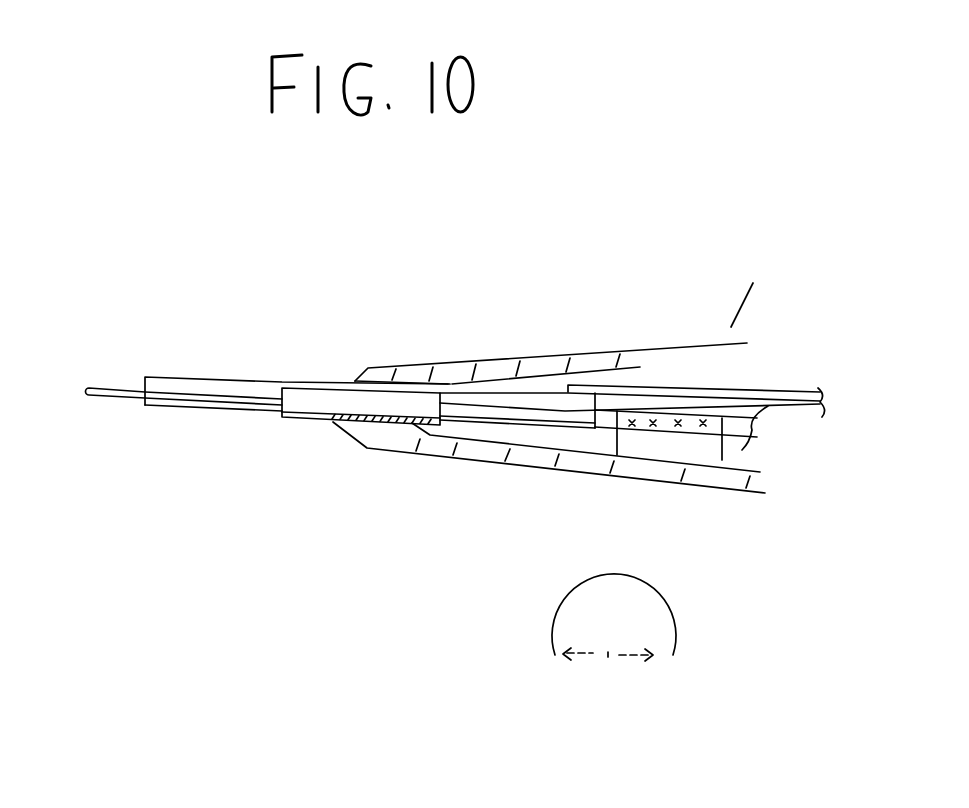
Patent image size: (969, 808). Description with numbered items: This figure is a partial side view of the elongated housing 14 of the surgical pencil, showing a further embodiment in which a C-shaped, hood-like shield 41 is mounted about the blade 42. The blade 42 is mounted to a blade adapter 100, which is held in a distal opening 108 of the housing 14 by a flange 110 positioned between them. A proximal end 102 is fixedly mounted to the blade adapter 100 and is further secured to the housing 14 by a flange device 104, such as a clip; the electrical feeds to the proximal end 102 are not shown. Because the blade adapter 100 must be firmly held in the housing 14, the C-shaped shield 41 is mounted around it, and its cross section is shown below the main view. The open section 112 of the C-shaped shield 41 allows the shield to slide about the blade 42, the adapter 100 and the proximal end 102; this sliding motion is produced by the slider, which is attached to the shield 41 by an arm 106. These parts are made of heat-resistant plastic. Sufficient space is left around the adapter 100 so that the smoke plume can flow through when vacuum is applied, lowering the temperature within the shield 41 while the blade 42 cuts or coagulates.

The housing 14 is at (731, 327).
The C-shaped shield 41 is at (235, 377).
The blade 42 is at (115, 400).
The blade adapter 100 is at (323, 402).
The proximal end 102 is at (497, 412).
The flange device 104 is at (665, 445).
The arm 106 is at (660, 388).
The distal opening 108 is at (355, 378).
The flange 110 is at (365, 418).
The open section 112 is at (609, 662).